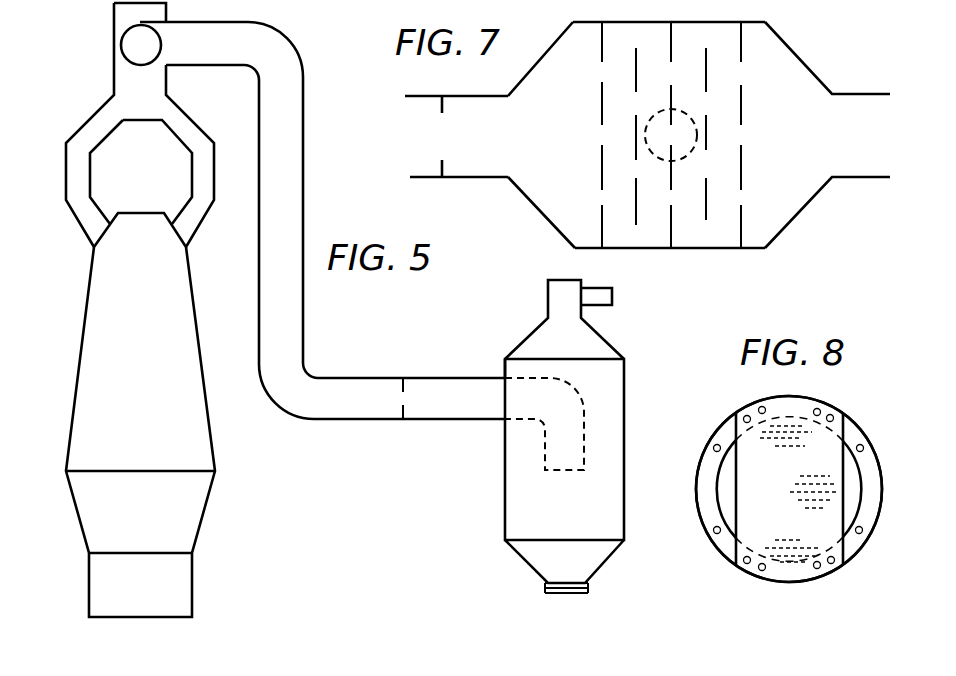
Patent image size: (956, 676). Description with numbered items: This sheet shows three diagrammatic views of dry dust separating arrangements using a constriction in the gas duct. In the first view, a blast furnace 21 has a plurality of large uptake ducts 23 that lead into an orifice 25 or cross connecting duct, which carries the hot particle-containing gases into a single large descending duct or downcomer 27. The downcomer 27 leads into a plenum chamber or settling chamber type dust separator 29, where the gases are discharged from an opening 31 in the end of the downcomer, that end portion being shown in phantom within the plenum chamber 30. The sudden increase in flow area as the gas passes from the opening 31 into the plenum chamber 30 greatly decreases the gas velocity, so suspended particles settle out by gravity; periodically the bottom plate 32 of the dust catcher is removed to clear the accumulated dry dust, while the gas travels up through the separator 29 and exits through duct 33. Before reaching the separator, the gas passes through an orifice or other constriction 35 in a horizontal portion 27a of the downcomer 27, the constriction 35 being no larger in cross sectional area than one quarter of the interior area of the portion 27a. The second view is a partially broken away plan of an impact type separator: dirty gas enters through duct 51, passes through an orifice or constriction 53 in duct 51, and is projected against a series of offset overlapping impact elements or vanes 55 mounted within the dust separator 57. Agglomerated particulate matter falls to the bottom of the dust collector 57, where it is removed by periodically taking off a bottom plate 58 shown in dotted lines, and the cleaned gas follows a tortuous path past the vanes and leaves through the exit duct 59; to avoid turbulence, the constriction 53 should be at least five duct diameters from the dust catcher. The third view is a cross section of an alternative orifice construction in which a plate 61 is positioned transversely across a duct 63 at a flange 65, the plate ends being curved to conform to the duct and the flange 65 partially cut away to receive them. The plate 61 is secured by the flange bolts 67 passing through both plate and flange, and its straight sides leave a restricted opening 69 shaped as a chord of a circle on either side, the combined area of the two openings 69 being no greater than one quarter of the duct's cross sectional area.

In FIG. 5, the blast furnace 21 is at (92, 342).
In FIG. 5, the uptake ducts 23 is at (68, 178).
In FIG. 5, the orifice 25 is at (124, 53).
In FIG. 5, the downcomer 27 is at (298, 141).
In FIG. 5, the horizontal portion 27a is at (338, 378).
In FIG. 5, the dust separator 29 is at (503, 370).
In FIG. 5, the plenum chamber 30 is at (612, 405).
In FIG. 5, the opening 31 is at (560, 472).
In FIG. 5, the bottom plate 32 is at (552, 597).
In FIG. 5, the duct 33 is at (615, 298).
In FIG. 5, the constriction 35 is at (402, 412).
In FIG. 7, the duct 51 is at (425, 95).
In FIG. 7, the constriction 53 is at (452, 103).
In FIG. 7, the impact elements 55 is at (706, 70).
In FIG. 7, the dust separator 57 is at (555, 45).
In FIG. 7, the bottom plate 58 is at (693, 150).
In FIG. 7, the exit duct 59 is at (853, 94).
In FIG. 8, the plate 61 is at (818, 436).
In FIG. 8, the duct 63 is at (862, 430).
In FIG. 8, the flange 65 is at (706, 512).
In FIG. 8, the flange bolts 67 is at (761, 406).
In FIG. 8, the restricted opening 69 is at (720, 473).